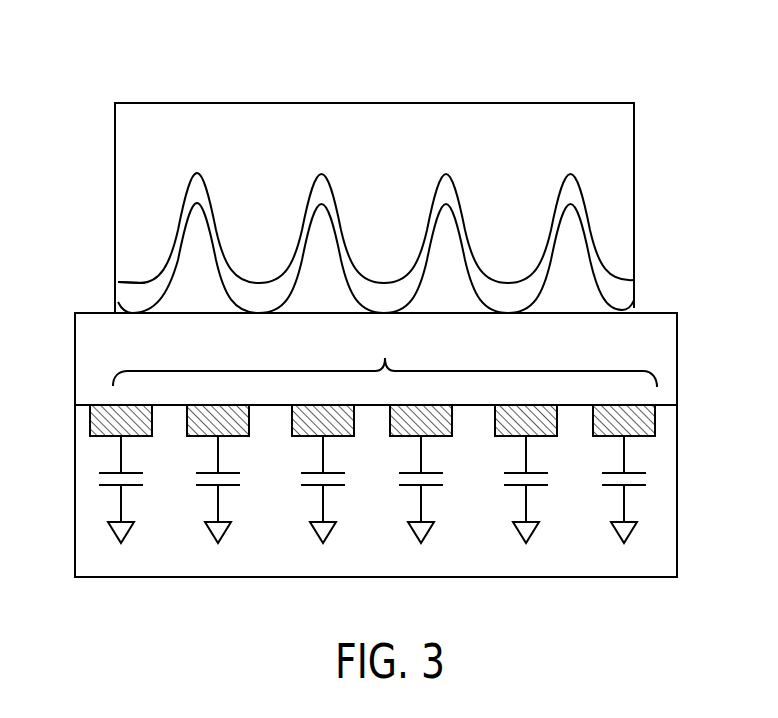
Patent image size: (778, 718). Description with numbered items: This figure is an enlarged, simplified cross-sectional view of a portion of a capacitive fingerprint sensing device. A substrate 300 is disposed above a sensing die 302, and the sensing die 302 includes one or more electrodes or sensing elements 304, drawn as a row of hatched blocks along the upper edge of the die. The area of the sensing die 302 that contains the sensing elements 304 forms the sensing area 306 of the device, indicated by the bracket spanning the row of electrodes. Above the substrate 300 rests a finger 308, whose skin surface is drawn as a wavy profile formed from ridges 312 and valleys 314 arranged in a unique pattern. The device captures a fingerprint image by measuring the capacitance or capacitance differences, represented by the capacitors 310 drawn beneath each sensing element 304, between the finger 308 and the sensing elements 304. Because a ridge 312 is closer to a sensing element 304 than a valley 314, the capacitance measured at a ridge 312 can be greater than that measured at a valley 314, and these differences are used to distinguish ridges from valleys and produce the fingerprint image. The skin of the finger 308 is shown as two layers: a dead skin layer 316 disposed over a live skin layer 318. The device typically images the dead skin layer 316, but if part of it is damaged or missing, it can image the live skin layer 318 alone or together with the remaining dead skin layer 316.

The substrate 300 is at (663, 386).
The sensing die 302 is at (663, 486).
The sensing element 304 is at (89, 423).
The sensing area 306 is at (385, 357).
The finger 308 is at (159, 113).
The capacitor 310 is at (98, 478).
The ridge 312 is at (115, 311).
The valley 314 is at (585, 210).
The dead skin layer 316 is at (125, 290).
The live skin layer 318 is at (201, 173).